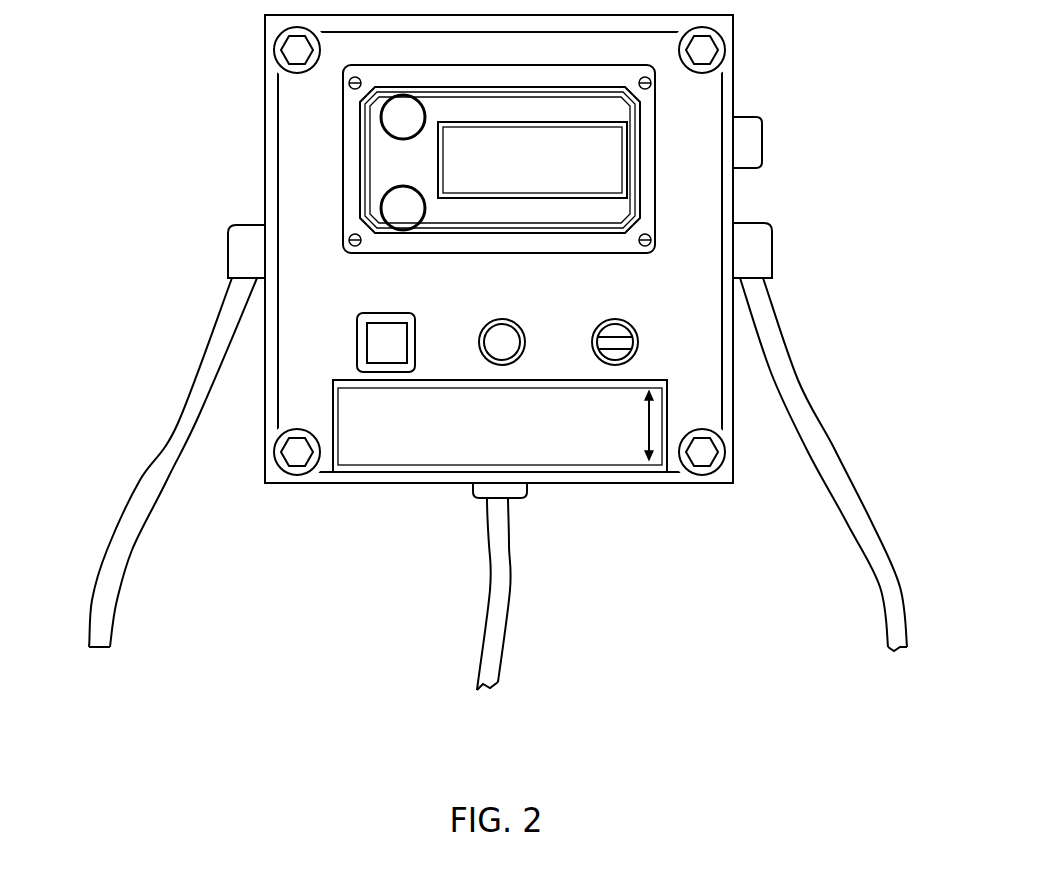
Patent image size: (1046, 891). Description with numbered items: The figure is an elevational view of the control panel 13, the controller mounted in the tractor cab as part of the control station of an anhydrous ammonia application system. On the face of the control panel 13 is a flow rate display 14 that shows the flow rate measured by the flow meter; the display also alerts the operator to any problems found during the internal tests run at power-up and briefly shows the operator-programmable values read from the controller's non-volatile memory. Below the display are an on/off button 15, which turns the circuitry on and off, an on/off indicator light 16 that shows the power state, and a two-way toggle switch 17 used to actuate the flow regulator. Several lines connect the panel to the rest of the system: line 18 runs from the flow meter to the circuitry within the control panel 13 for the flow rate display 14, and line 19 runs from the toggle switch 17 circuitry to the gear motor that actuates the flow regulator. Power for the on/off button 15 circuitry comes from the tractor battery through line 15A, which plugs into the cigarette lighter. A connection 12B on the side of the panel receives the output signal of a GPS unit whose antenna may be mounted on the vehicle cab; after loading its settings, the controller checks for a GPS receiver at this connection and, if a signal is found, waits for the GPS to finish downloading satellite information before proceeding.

The connection 12B is at (752, 142).
The control panel 13 is at (698, 213).
The flow rate display 14 is at (617, 155).
The on/off button 15 is at (378, 352).
The line 15A is at (497, 645).
The on/off indicator light 16 is at (505, 353).
The two-way toggle switch 17 is at (627, 353).
The line 18 is at (183, 425).
The line 19 is at (805, 398).